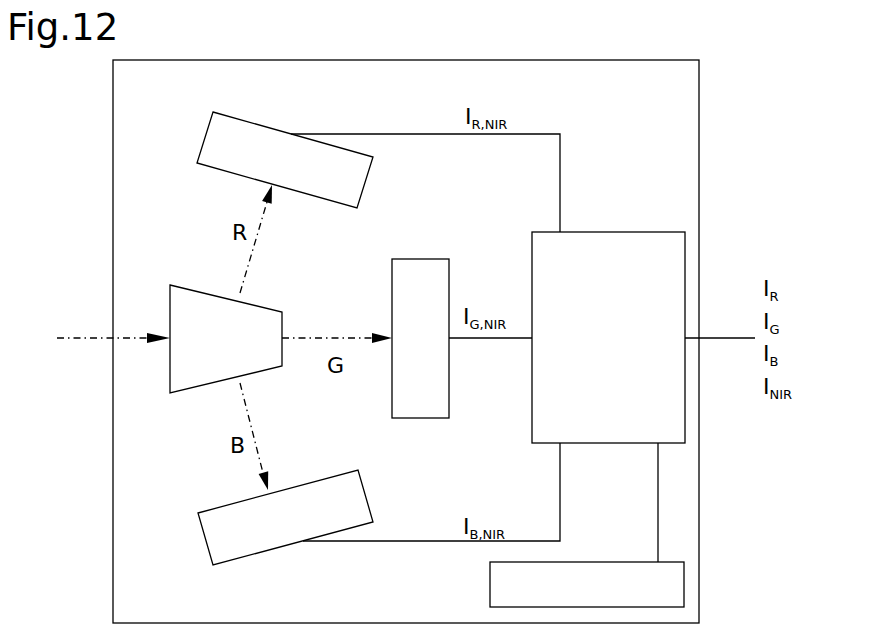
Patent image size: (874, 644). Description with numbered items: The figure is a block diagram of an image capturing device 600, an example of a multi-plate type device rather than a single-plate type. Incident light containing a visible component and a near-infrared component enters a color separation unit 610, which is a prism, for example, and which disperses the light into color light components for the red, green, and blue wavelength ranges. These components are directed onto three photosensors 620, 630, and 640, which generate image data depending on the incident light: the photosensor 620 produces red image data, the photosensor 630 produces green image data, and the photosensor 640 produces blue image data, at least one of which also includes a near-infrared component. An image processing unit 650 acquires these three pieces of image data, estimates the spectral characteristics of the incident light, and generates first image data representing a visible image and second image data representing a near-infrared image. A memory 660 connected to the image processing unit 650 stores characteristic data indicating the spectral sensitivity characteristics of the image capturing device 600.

The image capturing device 600 is at (699, 120).
The color separation unit 610 is at (268, 310).
The photosensor 620 is at (252, 111).
The photosensor 630 is at (450, 263).
The photosensor 640 is at (372, 505).
The image processing unit 650 is at (617, 232).
The memory 660 is at (490, 591).